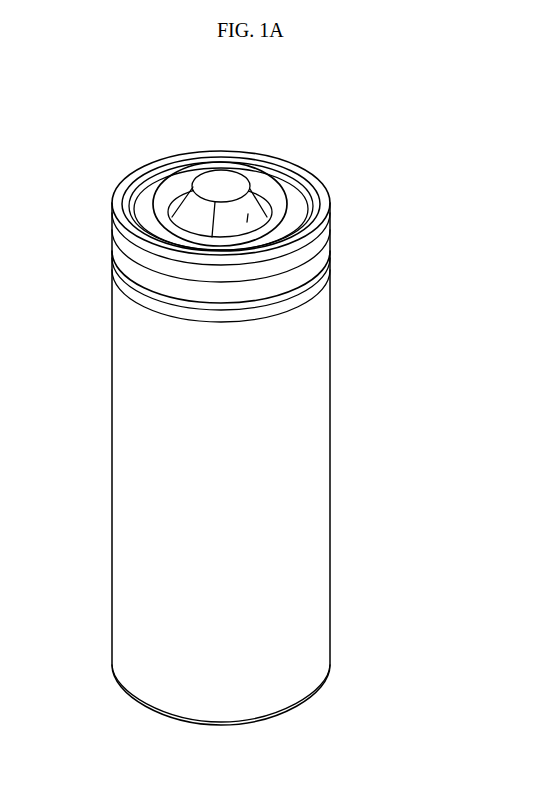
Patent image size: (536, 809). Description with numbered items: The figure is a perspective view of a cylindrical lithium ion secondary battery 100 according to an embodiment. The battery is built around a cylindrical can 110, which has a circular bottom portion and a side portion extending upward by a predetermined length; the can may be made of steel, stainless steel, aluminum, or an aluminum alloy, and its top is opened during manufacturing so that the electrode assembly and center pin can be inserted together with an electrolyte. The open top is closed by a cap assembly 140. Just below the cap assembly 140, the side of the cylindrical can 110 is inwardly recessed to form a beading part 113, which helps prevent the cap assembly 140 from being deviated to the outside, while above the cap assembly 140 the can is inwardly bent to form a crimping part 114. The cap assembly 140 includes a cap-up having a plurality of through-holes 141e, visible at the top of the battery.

The cylindrical lithium ion secondary battery 100 is at (108, 89).
The cylindrical can 110 is at (345, 464).
The beading part 113 is at (324, 276).
The crimping part 114 is at (314, 200).
The cap assembly 140 is at (221, 180).
The through-holes 141e is at (252, 212).